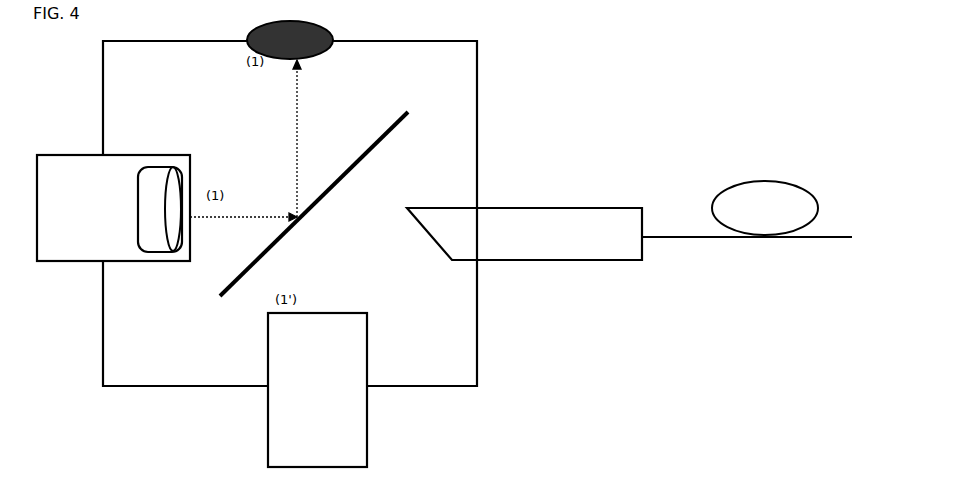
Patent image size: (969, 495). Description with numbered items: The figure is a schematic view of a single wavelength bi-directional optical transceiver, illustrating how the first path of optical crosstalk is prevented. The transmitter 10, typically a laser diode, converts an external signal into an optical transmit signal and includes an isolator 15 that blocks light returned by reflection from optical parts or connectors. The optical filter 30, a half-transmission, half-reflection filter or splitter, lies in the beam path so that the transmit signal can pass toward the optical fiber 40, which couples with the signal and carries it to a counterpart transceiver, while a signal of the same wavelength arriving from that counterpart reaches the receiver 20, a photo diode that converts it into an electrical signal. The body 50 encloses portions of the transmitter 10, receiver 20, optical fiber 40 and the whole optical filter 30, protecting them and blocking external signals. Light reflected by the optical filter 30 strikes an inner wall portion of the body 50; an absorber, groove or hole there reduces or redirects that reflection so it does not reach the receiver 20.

The transmitter 10 is at (122, 155).
The isolator 15 is at (180, 167).
The receiver 20 is at (367, 405).
The optical filter 30 is at (408, 115).
The optical fiber 40 is at (525, 208).
The body 50 is at (477, 332).